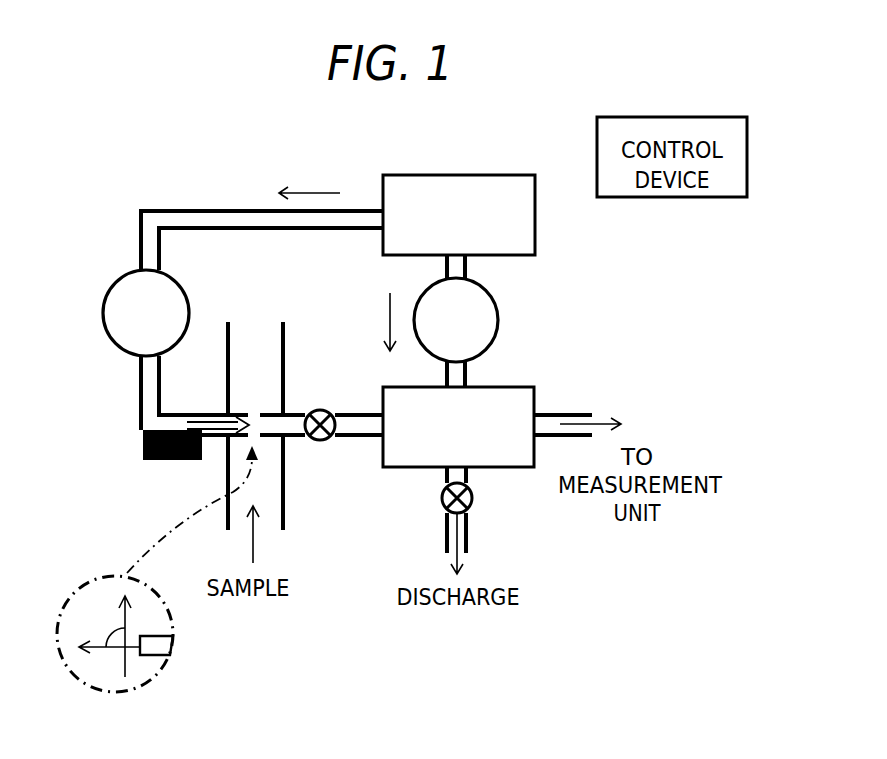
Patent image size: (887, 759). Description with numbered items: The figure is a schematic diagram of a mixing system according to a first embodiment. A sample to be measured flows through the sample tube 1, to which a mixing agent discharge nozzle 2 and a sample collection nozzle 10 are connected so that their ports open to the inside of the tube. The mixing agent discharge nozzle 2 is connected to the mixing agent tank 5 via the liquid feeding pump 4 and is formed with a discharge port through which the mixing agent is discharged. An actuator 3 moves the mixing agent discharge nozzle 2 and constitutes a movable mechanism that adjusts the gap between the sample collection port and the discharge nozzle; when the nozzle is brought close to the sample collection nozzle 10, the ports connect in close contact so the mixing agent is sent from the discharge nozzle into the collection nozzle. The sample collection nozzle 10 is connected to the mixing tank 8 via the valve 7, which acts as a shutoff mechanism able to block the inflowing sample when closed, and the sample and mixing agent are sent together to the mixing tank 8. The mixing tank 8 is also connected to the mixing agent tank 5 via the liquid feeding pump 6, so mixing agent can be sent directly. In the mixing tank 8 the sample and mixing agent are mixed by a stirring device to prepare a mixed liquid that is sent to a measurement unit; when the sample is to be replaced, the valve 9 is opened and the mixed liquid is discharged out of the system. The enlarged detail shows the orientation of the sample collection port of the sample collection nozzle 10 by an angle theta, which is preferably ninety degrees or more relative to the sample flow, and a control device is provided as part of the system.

The sample tube 1 is at (283, 372).
The mixing agent discharge nozzle 2 is at (243, 437).
The actuator 3 is at (143, 447).
The liquid feeding pump 4 is at (114, 284).
The mixing agent tank 5 is at (460, 175).
The liquid feeding pump 6 is at (498, 318).
The valve 7 is at (322, 440).
The mixing tank 8 is at (520, 387).
The valve 9 is at (470, 508).
The sample collection nozzle 10 is at (273, 437).